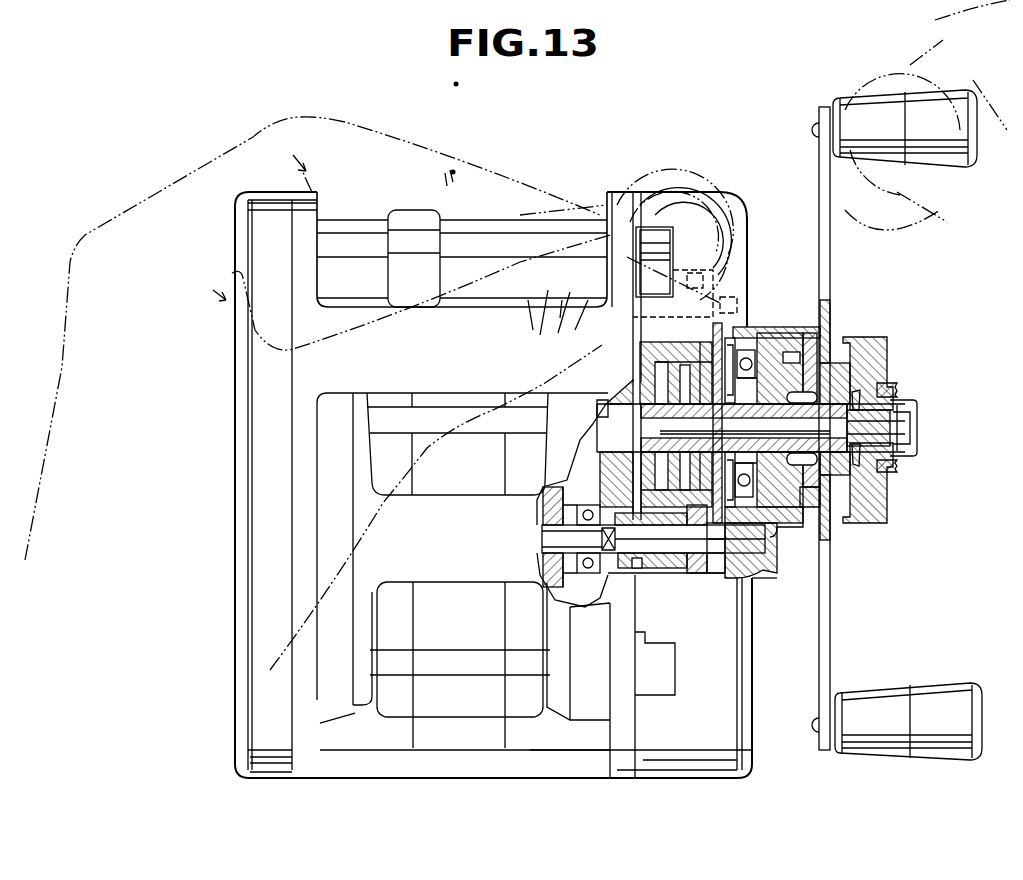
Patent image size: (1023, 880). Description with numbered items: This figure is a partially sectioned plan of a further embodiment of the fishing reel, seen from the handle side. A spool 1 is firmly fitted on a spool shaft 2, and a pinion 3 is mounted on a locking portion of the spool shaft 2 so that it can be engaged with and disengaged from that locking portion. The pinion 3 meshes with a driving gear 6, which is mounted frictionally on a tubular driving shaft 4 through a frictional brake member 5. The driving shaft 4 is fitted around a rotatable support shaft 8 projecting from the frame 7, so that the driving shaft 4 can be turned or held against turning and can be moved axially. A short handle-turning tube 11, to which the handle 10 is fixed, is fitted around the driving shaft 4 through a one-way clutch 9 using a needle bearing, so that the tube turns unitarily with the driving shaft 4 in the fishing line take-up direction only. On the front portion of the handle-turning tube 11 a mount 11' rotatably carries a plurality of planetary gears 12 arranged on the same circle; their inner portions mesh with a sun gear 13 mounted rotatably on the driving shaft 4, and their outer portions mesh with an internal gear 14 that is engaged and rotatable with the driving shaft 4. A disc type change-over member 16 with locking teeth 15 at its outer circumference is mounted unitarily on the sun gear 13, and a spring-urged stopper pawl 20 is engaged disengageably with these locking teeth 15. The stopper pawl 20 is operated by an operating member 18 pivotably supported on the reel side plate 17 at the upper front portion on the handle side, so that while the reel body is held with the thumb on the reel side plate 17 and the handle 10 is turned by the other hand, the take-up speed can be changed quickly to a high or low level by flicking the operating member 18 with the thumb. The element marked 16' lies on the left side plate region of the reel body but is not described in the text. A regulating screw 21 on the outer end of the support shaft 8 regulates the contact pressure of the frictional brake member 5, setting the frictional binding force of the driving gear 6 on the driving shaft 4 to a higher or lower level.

The spool 1 is at (412, 565).
The spool shaft 2 is at (542, 548).
The pinion 3 is at (670, 568).
The driving shaft 4 is at (838, 362).
The frictional brake member 5 is at (696, 570).
The driving gear 6 is at (665, 345).
The frame 7 is at (616, 200).
The support shaft 8 is at (898, 418).
The one-way clutch 9 is at (872, 385).
The handle 10 is at (830, 632).
The handle-turning tube 11 is at (792, 405).
The mount 11' is at (812, 399).
The planetary gears 12 is at (762, 350).
The sun gear 13 is at (712, 573).
The internal gear 14 is at (750, 358).
The locking teeth 15 is at (722, 573).
The change-over member 16 is at (692, 584).
The side plate 16' is at (243, 486).
The reel side plate 17 is at (718, 200).
The operating member 18 is at (652, 228).
The stopper pawl 20 is at (752, 325).
The regulating screw 21 is at (888, 345).